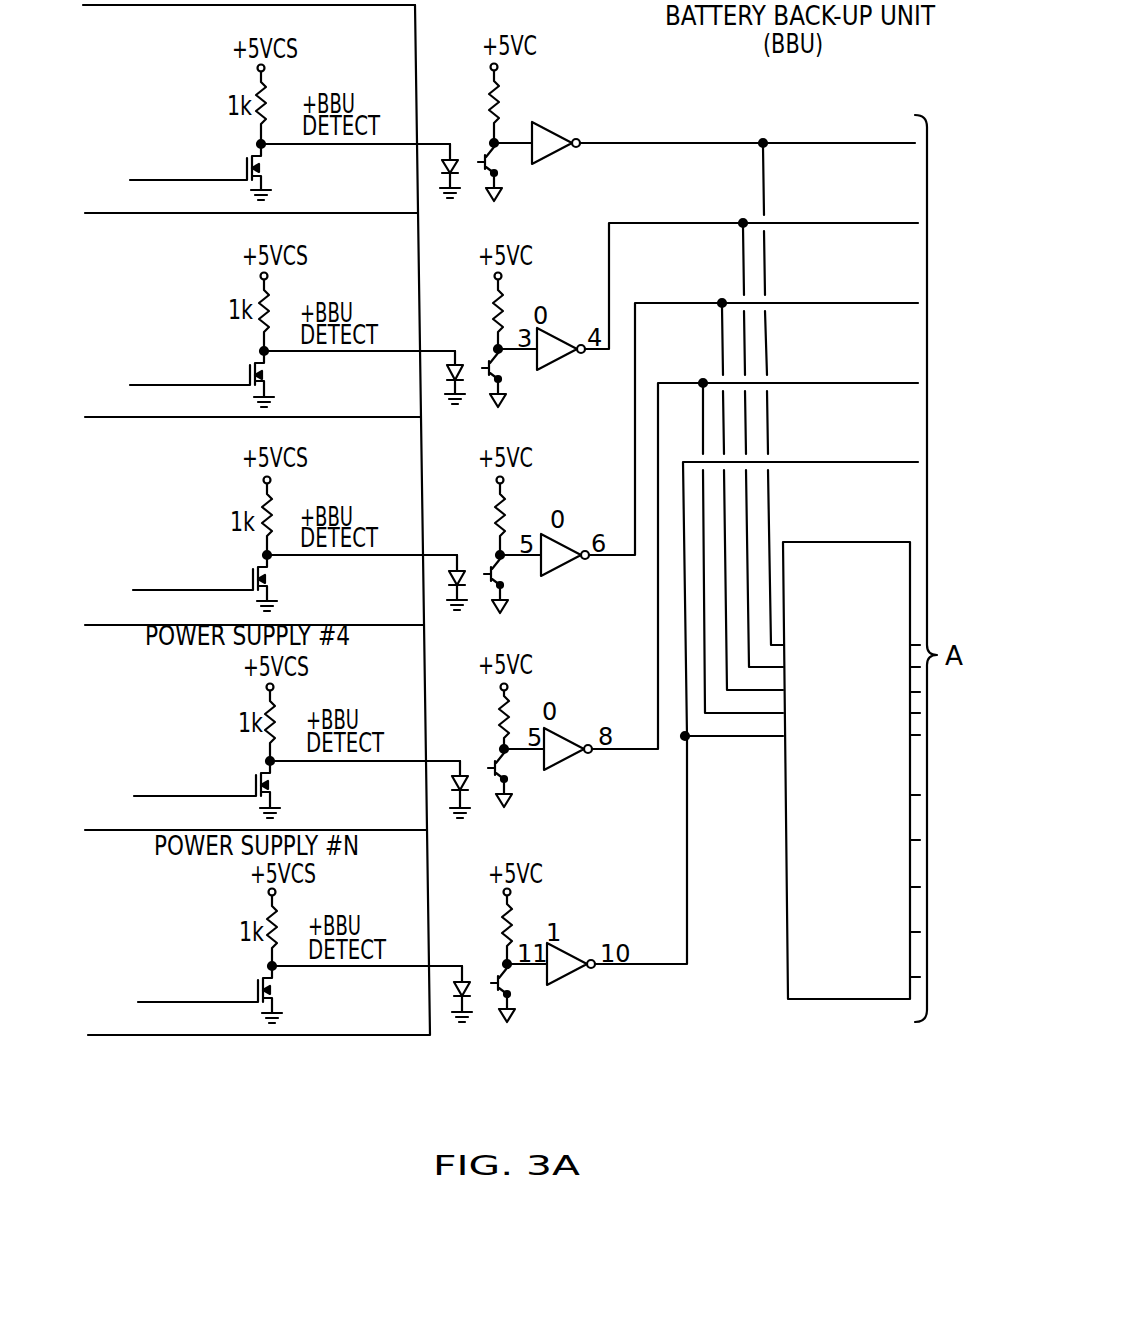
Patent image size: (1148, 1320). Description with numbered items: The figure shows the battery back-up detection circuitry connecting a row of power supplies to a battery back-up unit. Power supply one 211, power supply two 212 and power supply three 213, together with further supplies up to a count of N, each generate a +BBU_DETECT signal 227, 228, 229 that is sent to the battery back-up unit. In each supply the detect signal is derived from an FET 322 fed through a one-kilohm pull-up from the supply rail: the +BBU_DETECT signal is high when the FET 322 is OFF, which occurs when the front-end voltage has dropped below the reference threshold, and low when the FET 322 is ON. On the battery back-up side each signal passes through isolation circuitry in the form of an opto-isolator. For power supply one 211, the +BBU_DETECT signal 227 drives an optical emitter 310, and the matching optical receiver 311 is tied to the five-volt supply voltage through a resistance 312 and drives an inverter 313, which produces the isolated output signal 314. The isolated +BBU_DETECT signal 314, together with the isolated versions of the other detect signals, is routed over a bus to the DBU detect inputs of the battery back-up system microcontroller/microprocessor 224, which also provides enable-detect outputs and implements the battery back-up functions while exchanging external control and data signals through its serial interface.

The power supply (1) 211 is at (416, 23).
The power supply (2) 212 is at (419, 232).
The power supply (3) 213 is at (421, 462).
The +BBU_DETECT signal 227 is at (382, 146).
The +BBU_DETECT signal 228 is at (387, 353).
The +BBU_DETECT signal 229 is at (394, 558).
The optical emitter 310 is at (463, 130).
The optical receiver 311 is at (503, 172).
The resistance 312 is at (498, 97).
The inverter 313 is at (558, 125).
The isolated output signal 314 is at (682, 140).
The FET 322 is at (243, 163).
The battery back-up system microcontroller/microprocessor 224 is at (788, 990).